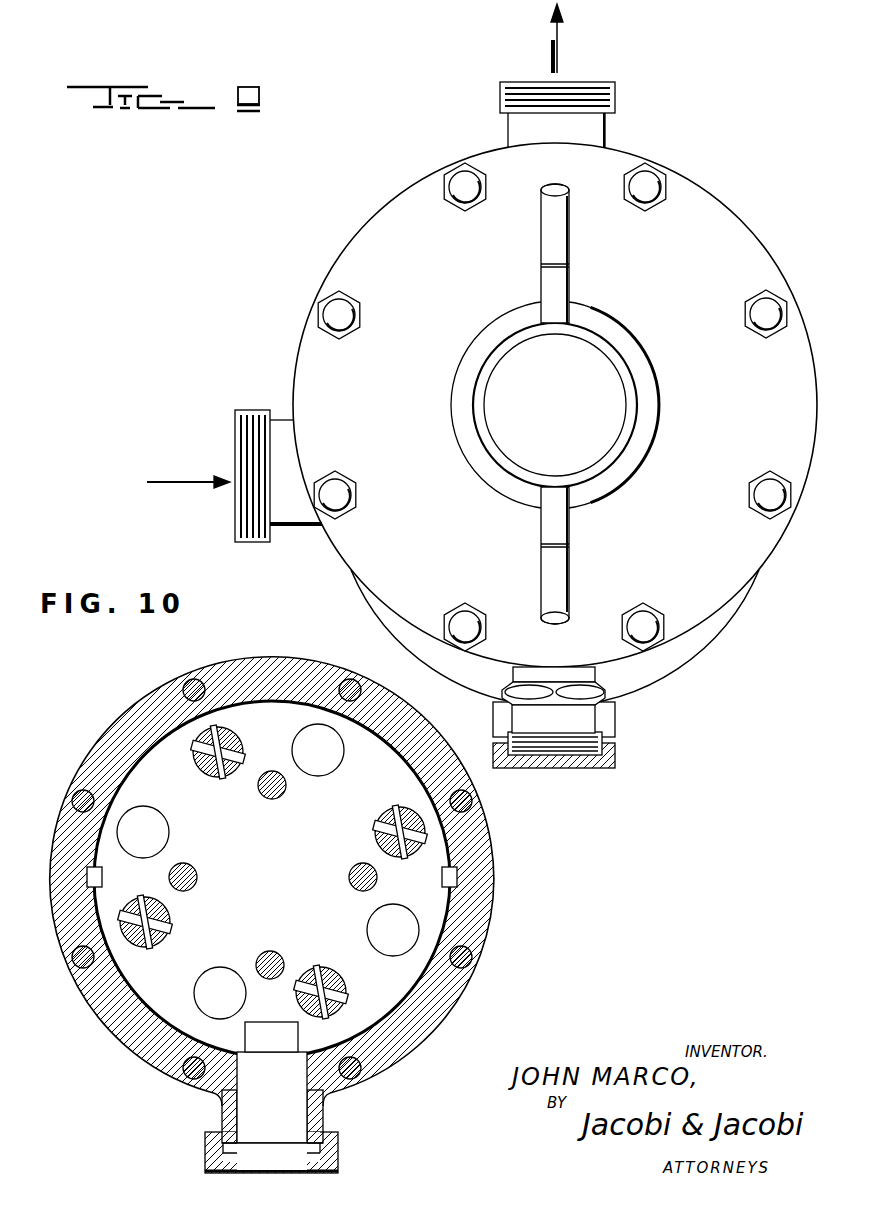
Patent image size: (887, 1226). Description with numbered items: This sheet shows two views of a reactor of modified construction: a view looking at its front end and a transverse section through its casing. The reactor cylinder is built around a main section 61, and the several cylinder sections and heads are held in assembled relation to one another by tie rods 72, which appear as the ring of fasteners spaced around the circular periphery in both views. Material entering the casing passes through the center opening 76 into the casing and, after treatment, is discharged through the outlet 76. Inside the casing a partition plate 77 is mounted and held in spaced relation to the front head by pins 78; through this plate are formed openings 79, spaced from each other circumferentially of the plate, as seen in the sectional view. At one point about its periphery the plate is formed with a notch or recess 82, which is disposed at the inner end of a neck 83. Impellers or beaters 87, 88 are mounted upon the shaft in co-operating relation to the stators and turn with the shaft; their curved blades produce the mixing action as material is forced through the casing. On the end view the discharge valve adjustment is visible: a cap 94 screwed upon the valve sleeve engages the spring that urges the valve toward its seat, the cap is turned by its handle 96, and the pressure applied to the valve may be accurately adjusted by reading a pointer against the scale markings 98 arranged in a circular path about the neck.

In FIG. 10, the main section 61 is at (145, 712).
In FIG. 9, the tie rods 72 is at (757, 294).
In FIG. 10, the tie rods 72 is at (307, 672).
In FIG. 9, the outlet 76 is at (277, 433).
In FIG. 9, the partition plate 77 is at (598, 137).
In FIG. 10, the partition plate 77 is at (140, 778).
In FIG. 10, the pins 78 is at (267, 797).
In FIG. 10, the openings 79 is at (152, 808).
In FIG. 10, the notch or recess 82 is at (258, 1023).
In FIG. 9, the neck 83 is at (605, 720).
In FIG. 10, the neck 83 is at (247, 1108).
In FIG. 10, the impeller or beater 87 is at (237, 750).
In FIG. 10, the impeller or beater 88 is at (228, 732).
In FIG. 9, the cap 94 is at (613, 383).
In FIG. 9, the handle 96 is at (544, 235).
In FIG. 9, the scale markings 98 is at (456, 366).